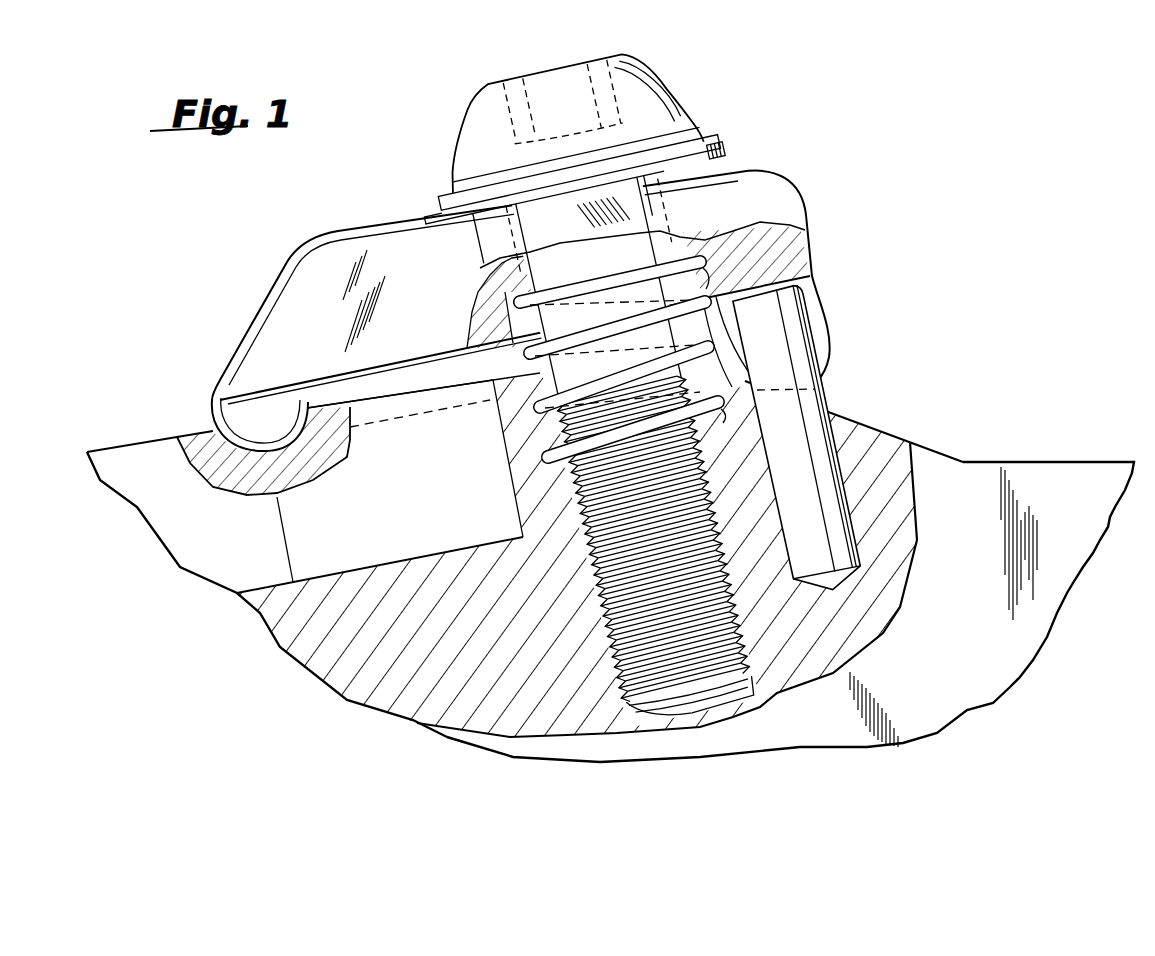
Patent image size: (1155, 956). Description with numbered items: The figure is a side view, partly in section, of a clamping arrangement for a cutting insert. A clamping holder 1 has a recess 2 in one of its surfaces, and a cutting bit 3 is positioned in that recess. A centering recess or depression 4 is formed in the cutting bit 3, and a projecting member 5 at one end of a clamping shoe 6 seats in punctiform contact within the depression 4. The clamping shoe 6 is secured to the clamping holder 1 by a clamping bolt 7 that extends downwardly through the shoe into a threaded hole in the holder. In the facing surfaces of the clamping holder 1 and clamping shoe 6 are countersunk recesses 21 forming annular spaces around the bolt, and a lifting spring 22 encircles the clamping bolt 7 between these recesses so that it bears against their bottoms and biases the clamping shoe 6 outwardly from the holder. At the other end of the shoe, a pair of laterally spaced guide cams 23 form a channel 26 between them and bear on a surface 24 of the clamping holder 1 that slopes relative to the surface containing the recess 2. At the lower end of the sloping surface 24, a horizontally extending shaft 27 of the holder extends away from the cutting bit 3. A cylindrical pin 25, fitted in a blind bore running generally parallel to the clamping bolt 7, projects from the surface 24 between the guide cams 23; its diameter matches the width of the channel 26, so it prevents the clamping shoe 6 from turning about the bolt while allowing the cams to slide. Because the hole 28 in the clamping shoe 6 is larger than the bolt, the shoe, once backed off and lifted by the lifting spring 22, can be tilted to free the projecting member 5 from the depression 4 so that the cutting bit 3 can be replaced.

The clamping holder 1 is at (977, 450).
The recess 2 is at (512, 506).
The cutting bit 3 is at (177, 569).
The centering recess or depression 4 is at (228, 445).
The projecting member 5 is at (279, 433).
The clamping shoe 6 is at (540, 311).
The clamping bolt 7 is at (676, 104).
The countersunk recesses 21 is at (706, 268).
The lifting spring 22 is at (536, 357).
The guide cams 23 is at (803, 266).
The sloping surface 24 is at (882, 431).
The cylindrical pin 25 is at (808, 395).
The channel 26 is at (821, 293).
The horizontally extending shaft 27 is at (1063, 461).
The hole 28 is at (689, 211).